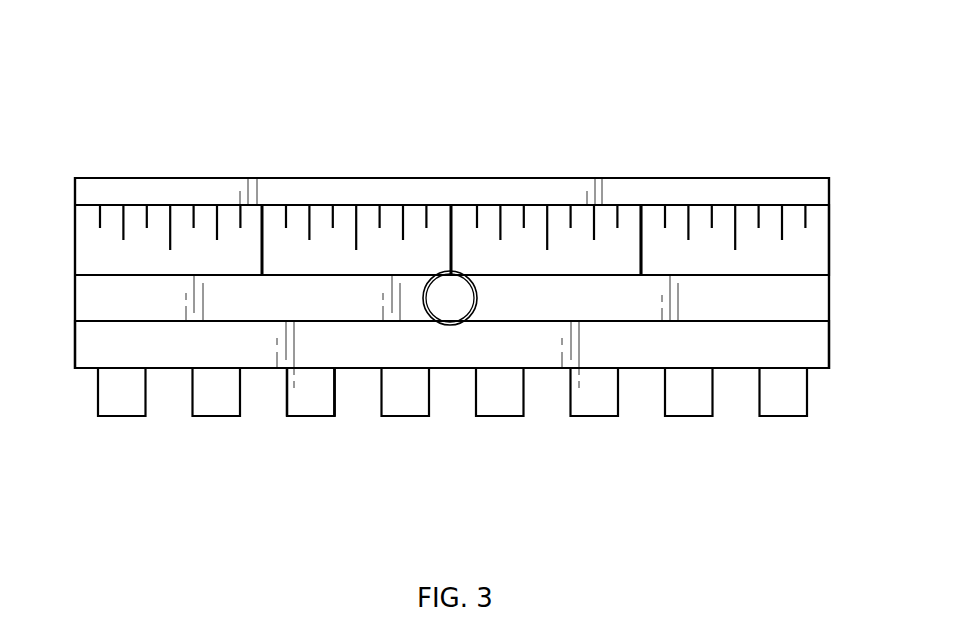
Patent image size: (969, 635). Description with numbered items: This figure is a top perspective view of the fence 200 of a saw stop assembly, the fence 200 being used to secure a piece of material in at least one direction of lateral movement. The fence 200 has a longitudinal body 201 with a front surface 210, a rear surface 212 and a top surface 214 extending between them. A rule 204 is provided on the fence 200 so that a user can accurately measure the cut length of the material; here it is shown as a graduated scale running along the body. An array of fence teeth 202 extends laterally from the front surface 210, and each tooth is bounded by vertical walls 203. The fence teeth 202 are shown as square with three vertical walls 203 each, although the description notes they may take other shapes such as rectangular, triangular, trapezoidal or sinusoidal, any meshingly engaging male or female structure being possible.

The fence 200 is at (311, 106).
The longitudinal body 201 is at (425, 171).
The fence teeth 202 is at (313, 424).
The vertical walls 203 is at (285, 403).
The rule 204 is at (822, 244).
The front surface 210 is at (88, 370).
The rear surface 212 is at (138, 178).
The top surface 214 is at (638, 355).